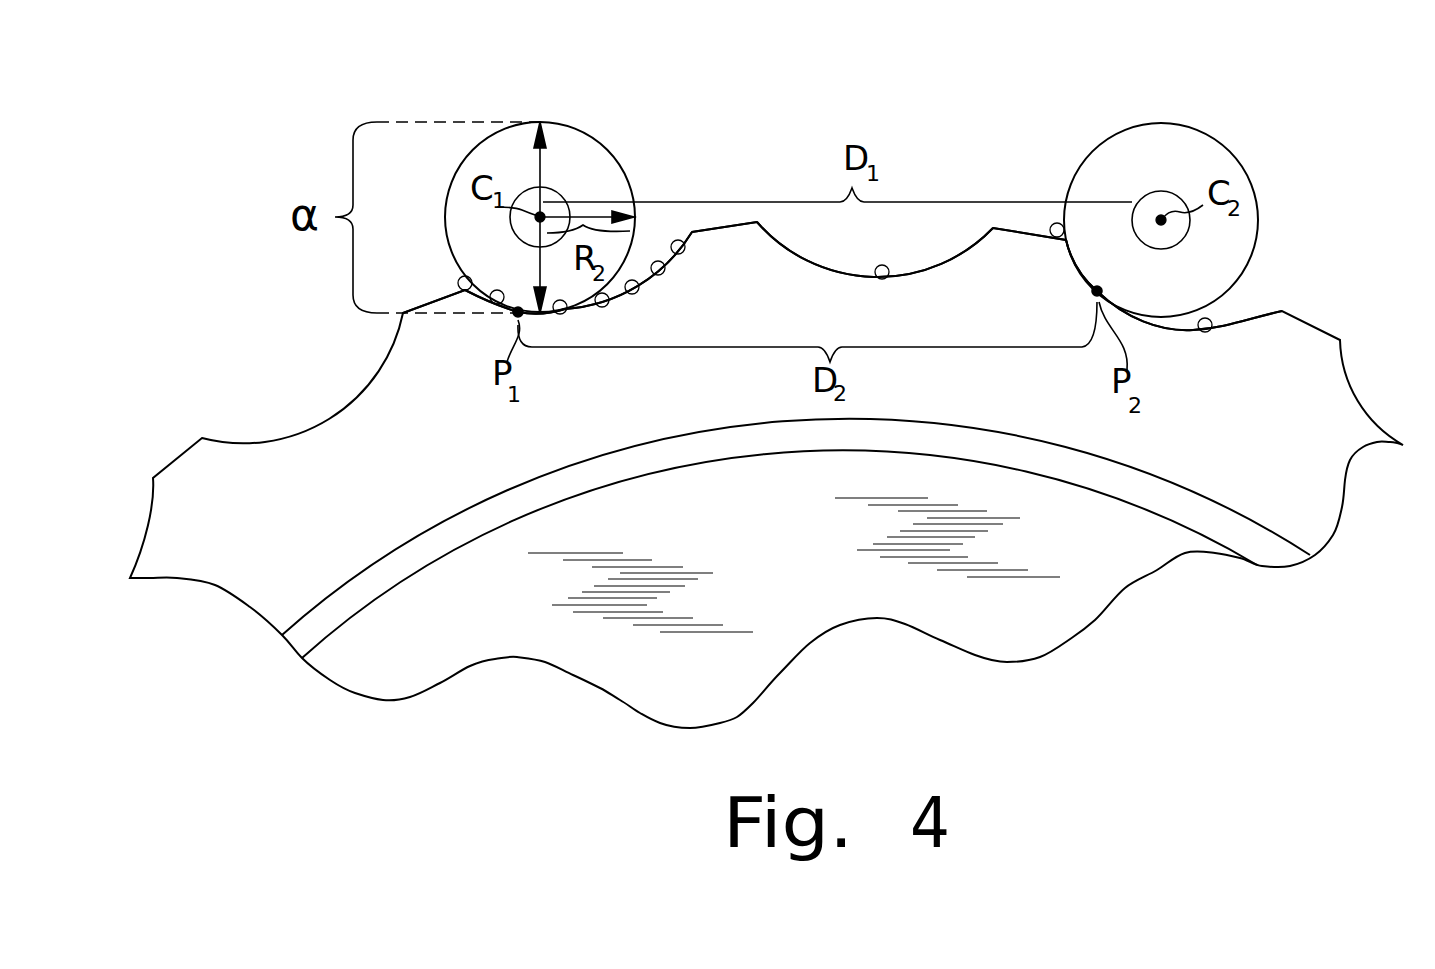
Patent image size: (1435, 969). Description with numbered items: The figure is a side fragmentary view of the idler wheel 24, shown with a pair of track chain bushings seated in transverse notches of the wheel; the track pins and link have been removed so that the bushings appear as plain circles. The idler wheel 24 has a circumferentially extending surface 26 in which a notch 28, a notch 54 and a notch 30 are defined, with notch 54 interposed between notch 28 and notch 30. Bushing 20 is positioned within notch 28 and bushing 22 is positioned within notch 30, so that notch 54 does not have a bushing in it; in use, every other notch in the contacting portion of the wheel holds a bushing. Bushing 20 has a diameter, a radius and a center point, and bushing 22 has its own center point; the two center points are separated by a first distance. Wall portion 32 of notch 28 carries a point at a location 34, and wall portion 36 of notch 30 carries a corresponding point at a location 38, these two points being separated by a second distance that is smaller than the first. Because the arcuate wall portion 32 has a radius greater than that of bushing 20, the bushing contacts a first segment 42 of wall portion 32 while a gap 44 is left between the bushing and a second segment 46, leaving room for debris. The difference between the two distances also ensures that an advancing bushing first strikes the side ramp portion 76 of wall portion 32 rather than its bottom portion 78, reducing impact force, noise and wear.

The bushing 20 is at (573, 128).
The bushing 22 is at (1197, 132).
The idler wheel 24 is at (553, 640).
The circumferentially extending surface 26 is at (432, 293).
The notch 28 is at (604, 307).
The notch 30 is at (1203, 333).
The wall portion 32 is at (462, 291).
The location 34 is at (532, 322).
The wall portion 36 is at (1052, 237).
The location 38 is at (1066, 309).
The first segment 42 is at (497, 305).
The gap 44 is at (635, 294).
The second segment 46 is at (660, 275).
The notch 54 is at (882, 279).
The side ramp portion 76 is at (682, 254).
The bottom portion 78 is at (563, 314).